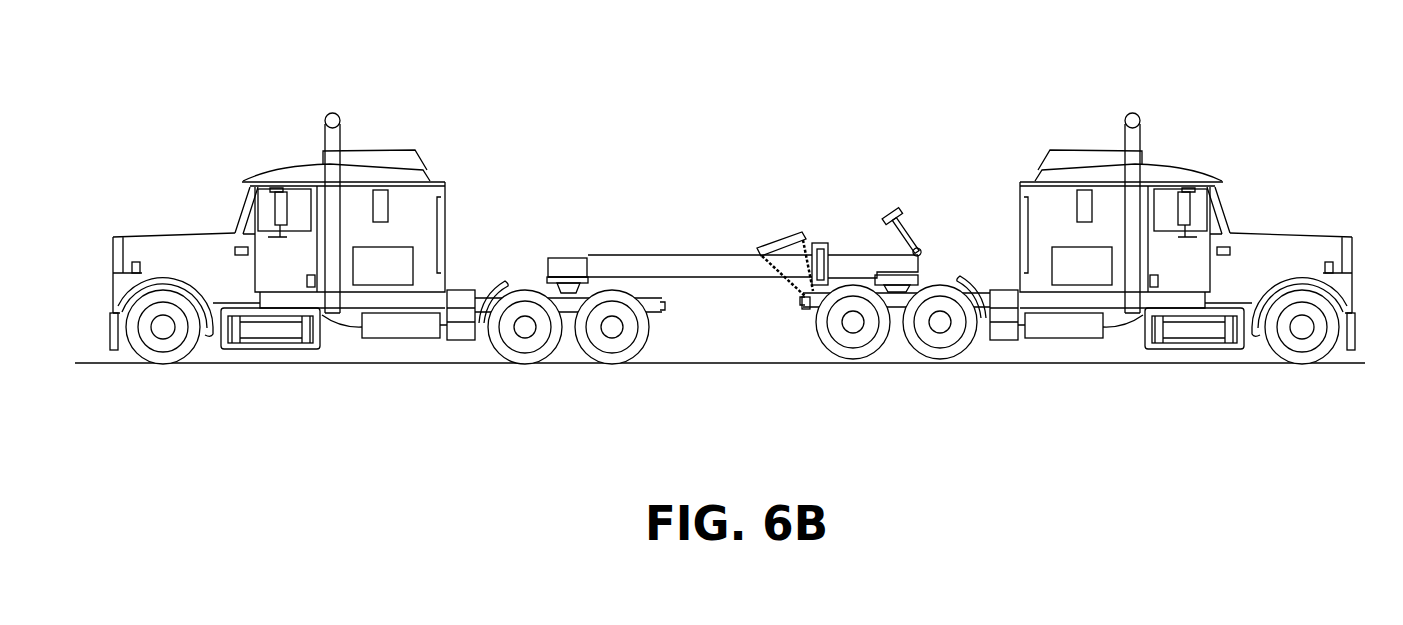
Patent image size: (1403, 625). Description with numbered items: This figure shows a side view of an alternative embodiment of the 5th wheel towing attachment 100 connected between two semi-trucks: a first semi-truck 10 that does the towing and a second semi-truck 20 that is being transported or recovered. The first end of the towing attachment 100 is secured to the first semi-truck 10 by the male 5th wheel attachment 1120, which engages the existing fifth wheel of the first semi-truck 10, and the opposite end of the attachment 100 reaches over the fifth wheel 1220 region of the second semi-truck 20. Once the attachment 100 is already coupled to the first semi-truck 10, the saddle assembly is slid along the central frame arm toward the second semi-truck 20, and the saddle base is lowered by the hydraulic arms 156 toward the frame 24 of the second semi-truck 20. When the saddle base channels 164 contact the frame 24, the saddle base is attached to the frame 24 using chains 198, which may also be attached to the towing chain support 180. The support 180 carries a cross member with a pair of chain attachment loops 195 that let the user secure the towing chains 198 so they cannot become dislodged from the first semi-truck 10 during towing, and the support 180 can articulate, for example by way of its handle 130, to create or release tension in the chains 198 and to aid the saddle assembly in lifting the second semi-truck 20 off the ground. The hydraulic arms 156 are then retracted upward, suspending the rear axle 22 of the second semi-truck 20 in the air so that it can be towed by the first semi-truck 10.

The first semi-truck 10 is at (430, 192).
The second semi-truck 20 is at (1065, 237).
The 5th wheel towing attachment 100 is at (669, 213).
The male 5th wheel attachment 1120 is at (575, 278).
The fifth wheel of second tractor 1220 is at (930, 260).
The towing chain support 180 is at (780, 243).
The chain attachment loops 195 is at (821, 247).
The hydraulic arms 156 is at (827, 243).
The release handle 130 is at (905, 218).
The chains 198 is at (778, 283).
The saddle base channels 164 is at (820, 290).
The frame 24 is at (815, 288).
The rear frame of second tractor 22 is at (895, 288).